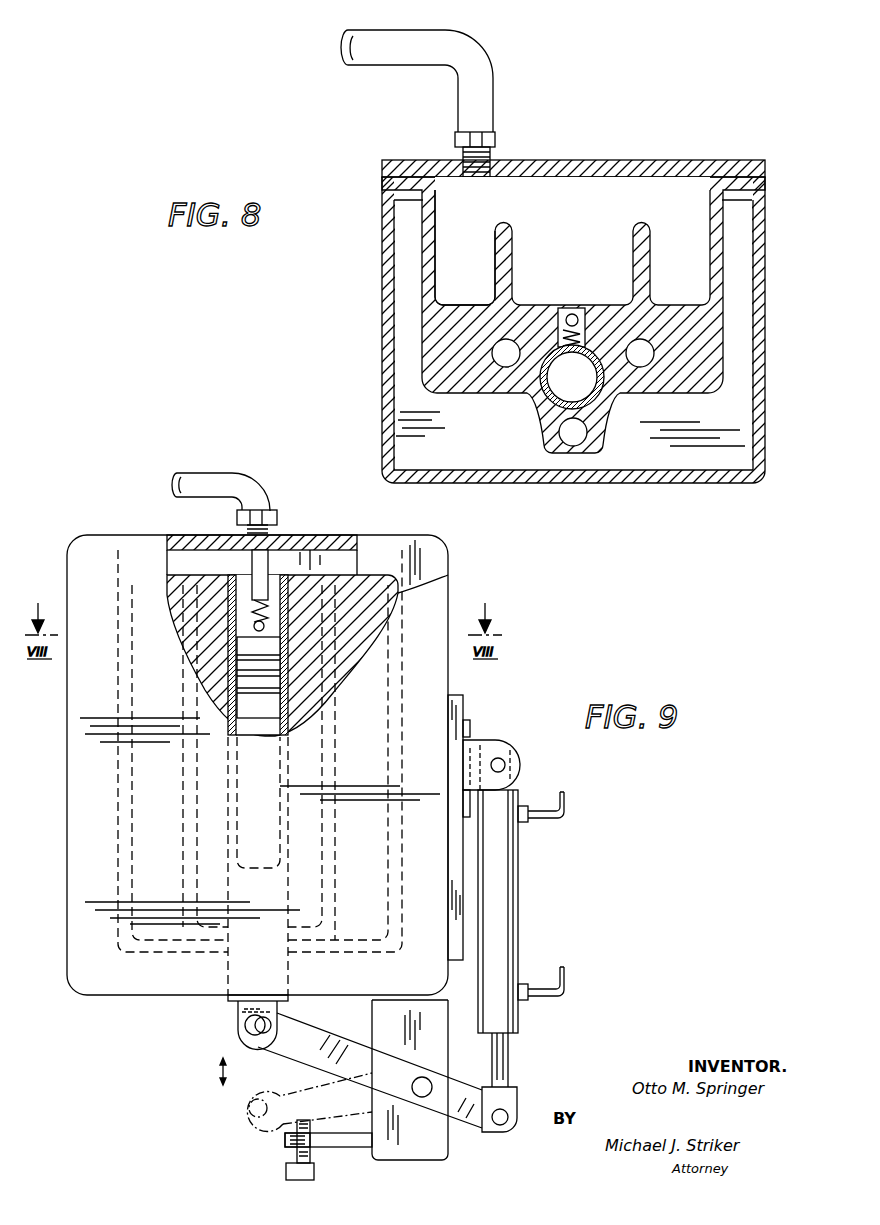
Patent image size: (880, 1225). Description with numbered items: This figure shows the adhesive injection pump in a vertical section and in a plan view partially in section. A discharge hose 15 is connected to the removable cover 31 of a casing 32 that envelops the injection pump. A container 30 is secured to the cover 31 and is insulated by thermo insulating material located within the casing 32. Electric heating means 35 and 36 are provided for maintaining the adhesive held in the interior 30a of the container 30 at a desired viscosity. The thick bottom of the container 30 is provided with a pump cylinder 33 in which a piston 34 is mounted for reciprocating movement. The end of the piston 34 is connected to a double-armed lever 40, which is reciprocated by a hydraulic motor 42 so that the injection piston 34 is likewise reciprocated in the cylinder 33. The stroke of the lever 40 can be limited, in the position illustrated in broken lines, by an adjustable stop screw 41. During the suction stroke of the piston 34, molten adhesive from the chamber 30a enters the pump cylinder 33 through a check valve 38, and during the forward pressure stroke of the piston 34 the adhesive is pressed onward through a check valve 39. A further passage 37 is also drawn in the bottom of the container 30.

In FIG. 8, the discharge hose 15 is at (430, 32).
In FIG. 8, the container 30 is at (723, 349).
In FIG. 8, the interior of body 30a is at (452, 255).
In FIG. 8, the removable cover 31 is at (694, 160).
In FIG. 8, the casing 32 is at (766, 238).
In FIG. 8, the pump cylinder 33 is at (548, 390).
In FIG. 9, the pump cylinder 33 is at (288, 597).
In FIG. 8, the piston 34 is at (590, 387).
In FIG. 9, the piston 34 is at (262, 718).
In FIG. 8, the electric heating means 35 is at (512, 342).
In FIG. 8, the electric heating means 36 is at (648, 355).
In FIG. 8, the passage 37 is at (576, 441).
In FIG. 8, the check valve 38 is at (573, 308).
In FIG. 9, the check valve 39 is at (235, 590).
In FIG. 9, the double-armed lever 40 is at (473, 1115).
In FIG. 9, the adjustable stop screw 41 is at (314, 1172).
In FIG. 9, the hydraulic motor 42 is at (510, 907).